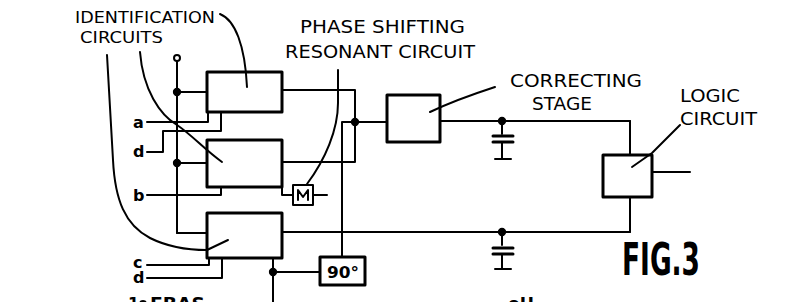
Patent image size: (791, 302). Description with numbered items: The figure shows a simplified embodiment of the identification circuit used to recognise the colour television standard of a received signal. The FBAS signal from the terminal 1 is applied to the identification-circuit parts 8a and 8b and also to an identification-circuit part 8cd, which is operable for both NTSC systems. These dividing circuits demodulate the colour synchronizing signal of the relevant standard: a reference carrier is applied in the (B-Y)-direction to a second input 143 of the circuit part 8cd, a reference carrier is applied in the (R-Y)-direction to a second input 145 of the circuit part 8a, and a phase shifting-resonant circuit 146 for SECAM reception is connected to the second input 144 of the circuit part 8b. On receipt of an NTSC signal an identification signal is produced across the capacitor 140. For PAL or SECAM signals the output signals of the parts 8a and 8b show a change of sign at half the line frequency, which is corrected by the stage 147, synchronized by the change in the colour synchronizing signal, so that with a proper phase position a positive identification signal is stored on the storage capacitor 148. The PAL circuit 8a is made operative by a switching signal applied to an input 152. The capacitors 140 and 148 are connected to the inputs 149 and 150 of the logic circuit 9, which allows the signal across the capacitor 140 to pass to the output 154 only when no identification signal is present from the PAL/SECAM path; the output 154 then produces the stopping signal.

The terminal 1 is at (173, 58).
The identification-circuit part 8a is at (282, 80).
The identification-circuit part 8b is at (282, 150).
The identification-circuit part 8cd is at (248, 248).
The second input 145 is at (282, 113).
The input 152 is at (222, 113).
The second input 144 is at (275, 188).
The phase shifting-resonant circuit 146 is at (318, 208).
The second input 143 is at (281, 258).
The stage 147 is at (420, 133).
The storage capacitor 148 is at (510, 145).
The storage capacitor 140 is at (510, 255).
The logic circuit 9 is at (652, 160).
The input 150 is at (633, 153).
The output 154 is at (652, 175).
The input 149 is at (630, 200).